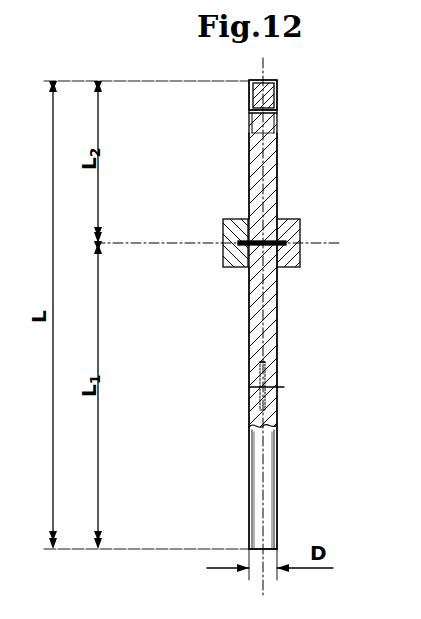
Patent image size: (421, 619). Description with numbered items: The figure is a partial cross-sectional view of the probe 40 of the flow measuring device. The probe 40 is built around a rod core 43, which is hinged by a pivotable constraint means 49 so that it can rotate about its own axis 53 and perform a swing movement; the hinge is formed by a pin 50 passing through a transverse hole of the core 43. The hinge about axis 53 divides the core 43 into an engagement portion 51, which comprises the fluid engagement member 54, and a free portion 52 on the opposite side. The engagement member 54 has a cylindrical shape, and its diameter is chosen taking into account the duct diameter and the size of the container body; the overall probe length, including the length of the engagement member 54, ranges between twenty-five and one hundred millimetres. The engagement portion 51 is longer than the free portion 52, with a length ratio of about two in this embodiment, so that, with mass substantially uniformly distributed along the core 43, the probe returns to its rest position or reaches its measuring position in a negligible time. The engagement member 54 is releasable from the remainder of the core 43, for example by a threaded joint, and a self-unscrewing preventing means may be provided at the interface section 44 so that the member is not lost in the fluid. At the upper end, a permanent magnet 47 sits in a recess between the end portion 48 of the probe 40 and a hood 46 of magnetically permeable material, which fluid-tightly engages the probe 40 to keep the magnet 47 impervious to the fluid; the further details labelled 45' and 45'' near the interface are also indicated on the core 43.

The probe 40 is at (340, 118).
The rod core 43 is at (268, 297).
The interface section 44 is at (284, 387).
The locking pin 45' is at (206, 381).
The pin end 45'' is at (205, 342).
The hood 46 is at (249, 120).
The permanent magnet 47 is at (249, 99).
The end portion 48 is at (249, 145).
The pivotable constraint means 49 is at (222, 251).
The pin 50 is at (298, 266).
The engagement portion 51 is at (244, 400).
The free portion 52 is at (281, 205).
The axis 53 is at (320, 243).
The fluid engagement member 54 is at (277, 498).